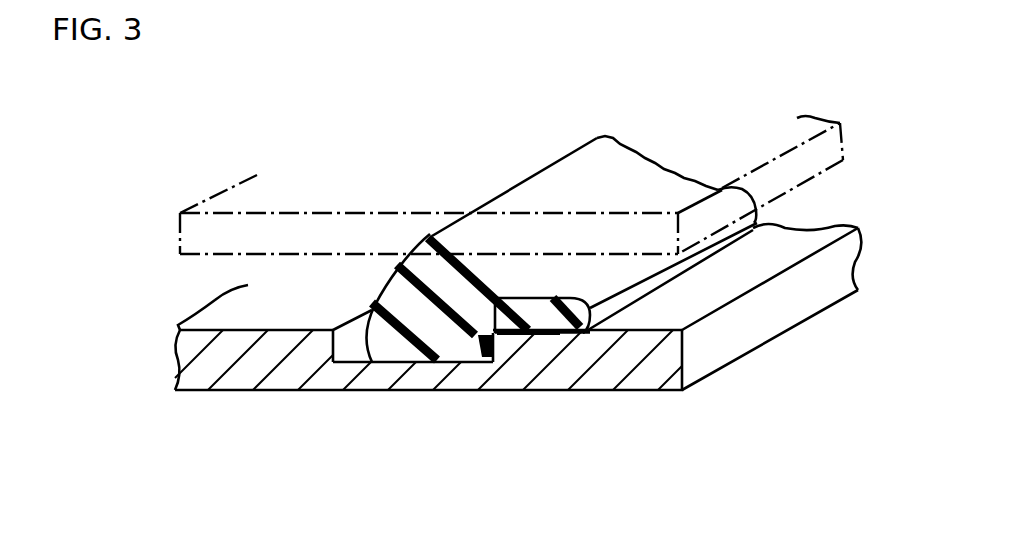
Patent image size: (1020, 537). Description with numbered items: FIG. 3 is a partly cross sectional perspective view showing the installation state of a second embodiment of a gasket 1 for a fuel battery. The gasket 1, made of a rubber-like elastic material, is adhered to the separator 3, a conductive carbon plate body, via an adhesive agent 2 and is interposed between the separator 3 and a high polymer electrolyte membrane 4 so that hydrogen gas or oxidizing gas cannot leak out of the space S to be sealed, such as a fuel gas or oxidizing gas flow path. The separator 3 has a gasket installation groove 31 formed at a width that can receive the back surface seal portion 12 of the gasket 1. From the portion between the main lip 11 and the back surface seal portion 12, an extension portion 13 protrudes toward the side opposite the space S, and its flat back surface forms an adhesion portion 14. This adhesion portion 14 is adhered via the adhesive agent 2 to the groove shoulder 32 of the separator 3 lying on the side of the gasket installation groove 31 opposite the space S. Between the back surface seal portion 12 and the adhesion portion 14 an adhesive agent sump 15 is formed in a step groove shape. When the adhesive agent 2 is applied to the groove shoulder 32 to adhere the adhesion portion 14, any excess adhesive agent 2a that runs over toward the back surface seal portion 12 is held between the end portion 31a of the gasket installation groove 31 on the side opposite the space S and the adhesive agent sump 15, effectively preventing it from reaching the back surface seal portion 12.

The gasket 1 is at (541, 178).
The adhesive agent 2 is at (518, 322).
The excess adhesive agent 2a is at (478, 333).
The separator 3 is at (655, 398).
The high polymer electrolyte membrane 4 is at (772, 138).
The main lip 11 is at (428, 242).
The back surface seal portion 12 is at (420, 367).
The extension portion 13 is at (545, 307).
The adhesion portion 14 is at (533, 337).
The adhesive agent sump 15 is at (493, 364).
The gasket installation groove 31 is at (350, 325).
The end portion of the gasket installation groove 31a is at (477, 367).
The groove shoulder 32 is at (652, 309).
The space to be sealed S is at (198, 283).